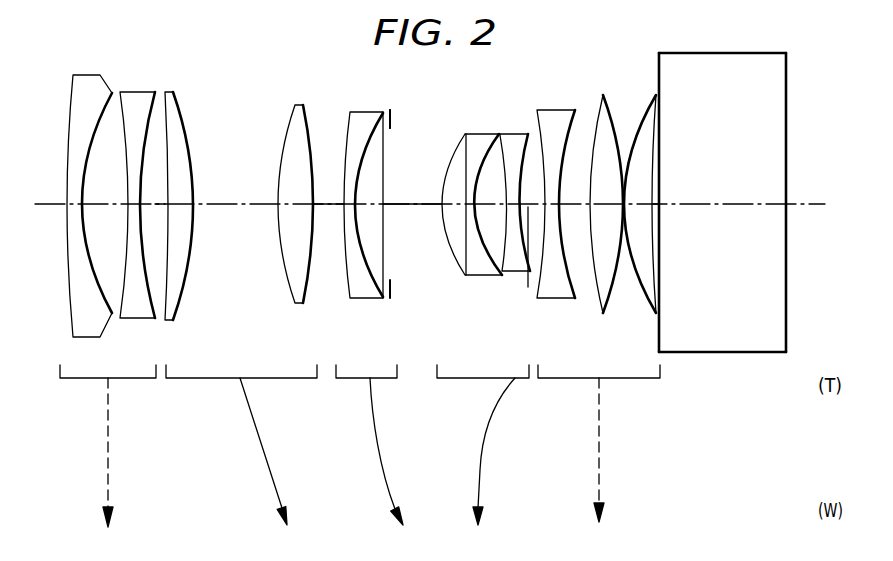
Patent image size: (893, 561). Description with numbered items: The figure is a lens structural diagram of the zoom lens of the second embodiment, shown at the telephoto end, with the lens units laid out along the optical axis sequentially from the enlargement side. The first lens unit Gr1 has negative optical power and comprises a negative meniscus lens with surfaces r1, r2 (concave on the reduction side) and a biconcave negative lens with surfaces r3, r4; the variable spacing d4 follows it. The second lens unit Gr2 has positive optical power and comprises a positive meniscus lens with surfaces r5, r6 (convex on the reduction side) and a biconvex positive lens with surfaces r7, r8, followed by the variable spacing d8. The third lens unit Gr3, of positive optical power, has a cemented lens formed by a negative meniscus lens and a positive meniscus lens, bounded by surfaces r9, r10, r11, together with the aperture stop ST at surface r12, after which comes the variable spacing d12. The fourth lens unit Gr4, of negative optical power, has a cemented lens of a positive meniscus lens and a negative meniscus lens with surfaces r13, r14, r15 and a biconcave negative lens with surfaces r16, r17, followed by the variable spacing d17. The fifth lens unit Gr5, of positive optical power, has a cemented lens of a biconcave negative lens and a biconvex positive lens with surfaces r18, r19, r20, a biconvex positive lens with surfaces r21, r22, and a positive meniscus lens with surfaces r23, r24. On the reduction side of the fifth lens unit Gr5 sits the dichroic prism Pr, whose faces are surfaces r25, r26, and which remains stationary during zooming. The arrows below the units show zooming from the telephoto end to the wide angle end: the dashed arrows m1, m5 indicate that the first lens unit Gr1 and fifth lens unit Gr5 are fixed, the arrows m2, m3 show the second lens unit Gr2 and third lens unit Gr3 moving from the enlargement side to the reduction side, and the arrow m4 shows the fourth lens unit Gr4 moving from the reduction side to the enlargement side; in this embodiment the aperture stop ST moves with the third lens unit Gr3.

The first surface r1 is at (70, 103).
The second surface r2 is at (83, 233).
The third surface r3 is at (123, 177).
The fourth surface r4 is at (148, 272).
The axial distance after fourth surface d4 is at (155, 193).
The fifth surface r5 is at (168, 127).
The sixth surface r6 is at (188, 153).
The seventh surface r7 is at (287, 133).
The eighth surface r8 is at (305, 298).
The axial distance after eighth surface d8 is at (328, 193).
The ninth surface r9 is at (348, 120).
The tenth surface r10 is at (367, 147).
The eleventh surface r11 is at (382, 253).
The twelfth surface r12 is at (392, 295).
The aperture stop ST is at (420, 223).
The axial distance after twelfth surface d12 is at (412, 193).
The thirteenth surface r13 is at (460, 143).
The fourteenth surface r14 is at (458, 223).
The fifteenth surface r15 is at (480, 272).
The sixteenth surface r16 is at (497, 152).
The seventeenth surface r17 is at (510, 160).
The axial distance after seventeenth surface d17 is at (515, 259).
The eighteenth surface r18 is at (547, 288).
The nineteenth surface r19 is at (563, 108).
The twentieth surface r20 is at (585, 282).
The twenty-first surface r21 is at (597, 112).
The twenty-second surface r22 is at (615, 120).
The twenty-third surface r23 is at (643, 93).
The twenty-fourth surface r24 is at (657, 270).
The twenty-fifth surface r25 is at (658, 341).
The twenty-sixth surface r26 is at (787, 98).
The dichroic prism Pr is at (722, 353).
The first lens unit Gr1 is at (108, 389).
The second lens unit Gr2 is at (241, 389).
The third lens unit Gr3 is at (365, 388).
The fourth lens unit Gr4 is at (483, 388).
The fifth lens unit Gr5 is at (599, 388).
The arrow m1 is at (108, 460).
The arrow m2 is at (262, 452).
The arrow m3 is at (375, 452).
The arrow m4 is at (487, 443).
The arrow m5 is at (600, 455).